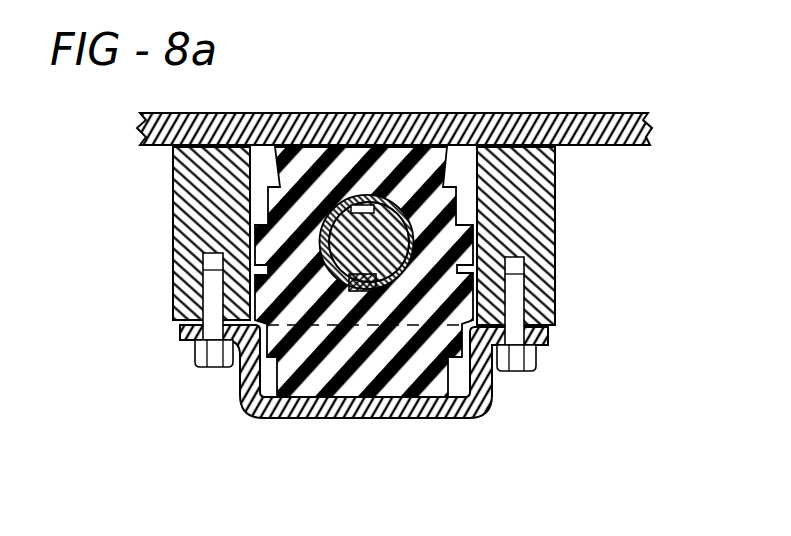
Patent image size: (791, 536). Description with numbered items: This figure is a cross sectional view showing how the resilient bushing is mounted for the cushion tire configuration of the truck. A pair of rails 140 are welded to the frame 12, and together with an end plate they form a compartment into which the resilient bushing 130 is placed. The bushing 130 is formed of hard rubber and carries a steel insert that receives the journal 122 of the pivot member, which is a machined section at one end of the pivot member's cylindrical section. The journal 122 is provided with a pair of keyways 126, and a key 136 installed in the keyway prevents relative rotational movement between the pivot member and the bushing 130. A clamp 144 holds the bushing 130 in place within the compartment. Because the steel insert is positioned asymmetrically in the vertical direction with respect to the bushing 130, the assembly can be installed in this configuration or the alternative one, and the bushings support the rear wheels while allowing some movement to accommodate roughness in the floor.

The frame 12 is at (358, 120).
The keyway 126 is at (368, 204).
The rails 140 is at (195, 215).
The journal 122 is at (376, 277).
The clamp 144 is at (240, 382).
The resilient bushing 130 is at (323, 362).
The key 136 is at (490, 370).